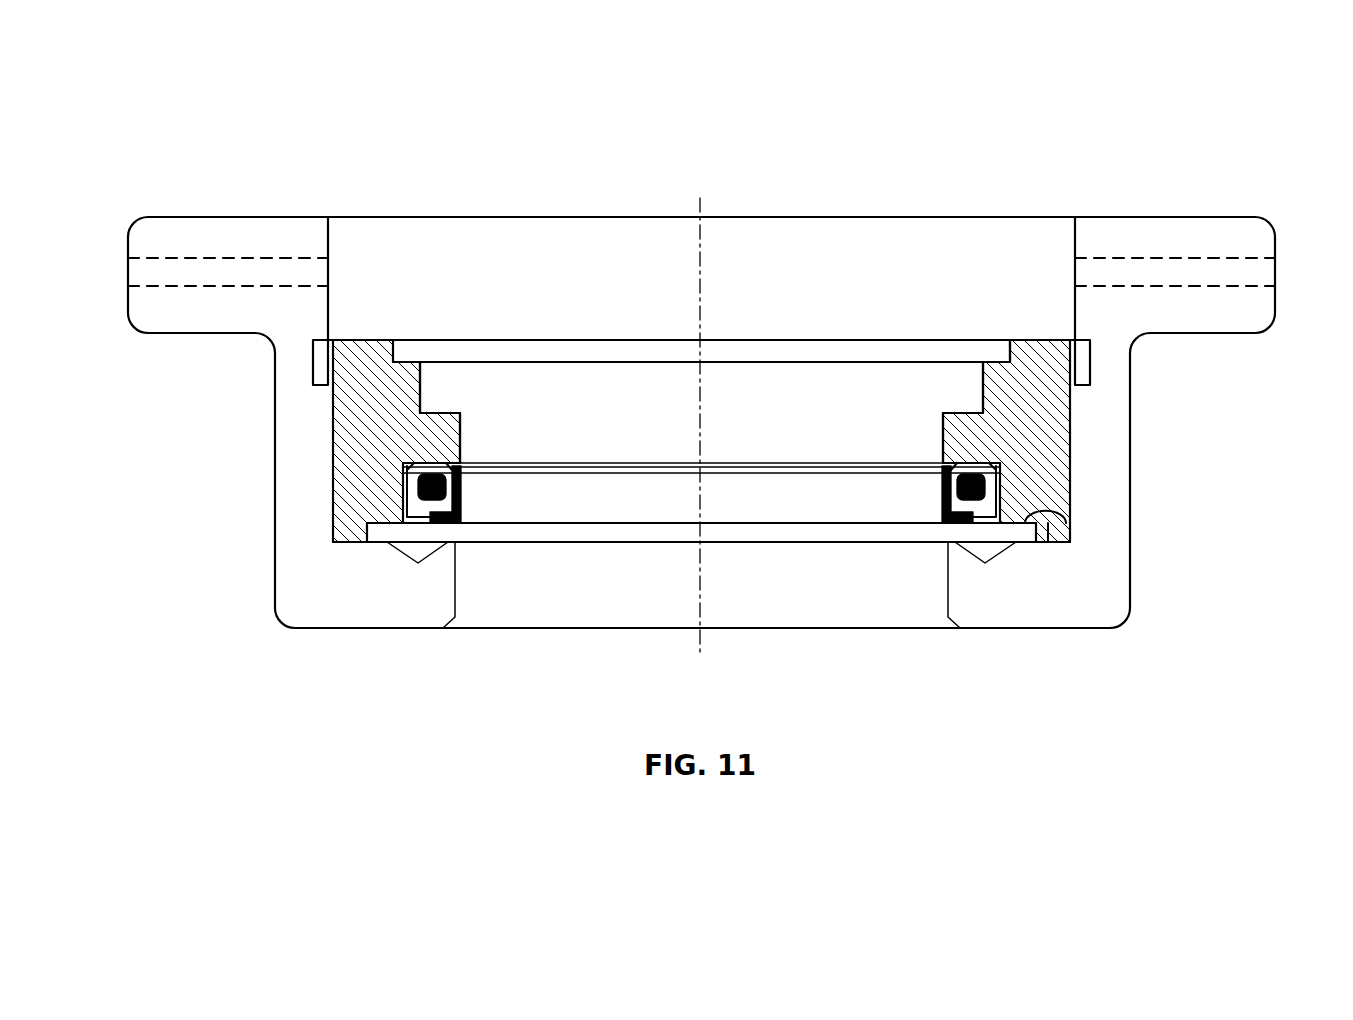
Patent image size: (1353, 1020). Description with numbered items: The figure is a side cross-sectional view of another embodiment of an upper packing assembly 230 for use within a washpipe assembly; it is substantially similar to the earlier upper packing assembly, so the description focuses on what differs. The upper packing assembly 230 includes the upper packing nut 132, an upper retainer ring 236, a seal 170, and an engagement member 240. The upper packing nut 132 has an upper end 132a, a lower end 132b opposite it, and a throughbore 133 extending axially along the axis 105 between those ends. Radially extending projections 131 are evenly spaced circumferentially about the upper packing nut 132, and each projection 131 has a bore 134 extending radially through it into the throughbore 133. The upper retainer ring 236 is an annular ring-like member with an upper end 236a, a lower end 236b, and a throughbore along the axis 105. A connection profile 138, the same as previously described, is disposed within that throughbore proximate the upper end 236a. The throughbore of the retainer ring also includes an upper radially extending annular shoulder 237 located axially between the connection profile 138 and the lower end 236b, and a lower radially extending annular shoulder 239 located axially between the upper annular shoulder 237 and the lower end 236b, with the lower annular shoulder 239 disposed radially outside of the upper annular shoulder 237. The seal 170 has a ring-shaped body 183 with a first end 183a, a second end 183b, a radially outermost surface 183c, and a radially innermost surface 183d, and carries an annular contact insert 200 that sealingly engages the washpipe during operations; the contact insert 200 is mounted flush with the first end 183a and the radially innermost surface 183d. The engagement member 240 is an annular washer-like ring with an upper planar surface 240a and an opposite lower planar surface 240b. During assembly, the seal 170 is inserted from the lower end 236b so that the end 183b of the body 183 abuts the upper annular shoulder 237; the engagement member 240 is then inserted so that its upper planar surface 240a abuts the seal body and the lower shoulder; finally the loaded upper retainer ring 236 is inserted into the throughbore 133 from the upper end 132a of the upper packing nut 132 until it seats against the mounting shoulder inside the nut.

The upper packing assembly 230 is at (926, 147).
The upper packing nut 132 is at (1135, 420).
The upper end 132a is at (250, 212).
The lower end 132b is at (338, 633).
The radially extending projections 131 is at (190, 336).
The throughbore 133 is at (510, 255).
The bore 134 is at (185, 260).
The axis 105 is at (703, 243).
The upper retainer ring 236 is at (331, 475).
The upper end 236a is at (806, 338).
The lower end 236b is at (1059, 556).
The upper radially extending annular shoulder 237 is at (462, 432).
The connection profile 138 is at (978, 375).
The annular contact insert 200 is at (939, 490).
The engagement member 240 is at (626, 547).
The upper planar surface 240a is at (1060, 518).
The lower planar surface 240b is at (990, 547).
The lower radially extending annular shoulder 239 is at (388, 543).
The ring-shaped body 183 is at (1010, 498).
The first end 183a is at (430, 547).
The second end 183b is at (437, 466).
The radially outermost surface 183c is at (401, 508).
The radially innermost surface 183d is at (470, 498).
The seal 170 is at (933, 508).